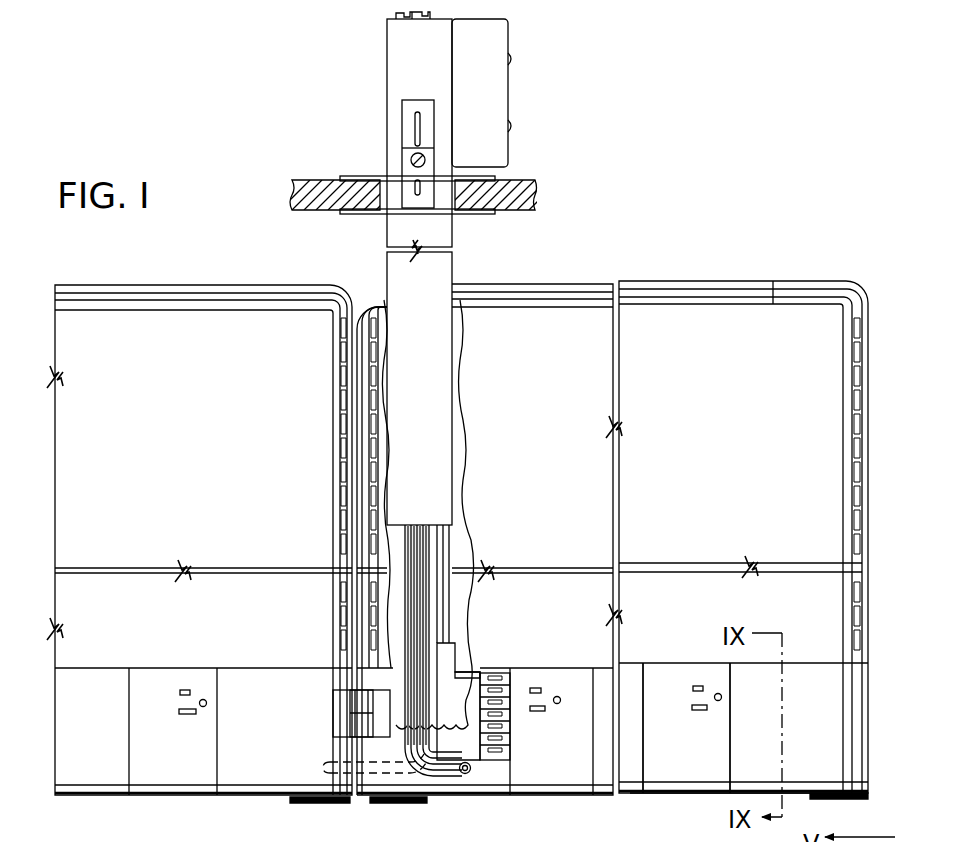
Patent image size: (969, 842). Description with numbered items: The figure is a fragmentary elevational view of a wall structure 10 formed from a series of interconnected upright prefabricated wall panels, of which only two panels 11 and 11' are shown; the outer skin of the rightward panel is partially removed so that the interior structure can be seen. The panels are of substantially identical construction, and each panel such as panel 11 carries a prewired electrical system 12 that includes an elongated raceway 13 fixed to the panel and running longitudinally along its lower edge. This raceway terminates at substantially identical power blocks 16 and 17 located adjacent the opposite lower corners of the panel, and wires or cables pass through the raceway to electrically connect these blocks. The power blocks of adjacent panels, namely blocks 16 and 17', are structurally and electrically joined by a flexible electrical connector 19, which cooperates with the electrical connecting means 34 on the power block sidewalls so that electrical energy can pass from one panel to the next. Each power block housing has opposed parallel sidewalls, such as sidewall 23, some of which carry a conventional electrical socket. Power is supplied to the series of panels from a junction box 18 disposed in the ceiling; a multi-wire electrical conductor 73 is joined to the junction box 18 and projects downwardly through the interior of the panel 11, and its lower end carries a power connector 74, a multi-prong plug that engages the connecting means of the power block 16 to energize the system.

The wall structure 10 is at (668, 178).
The wall panel 11 is at (737, 510).
The wall panel 11' is at (199, 510).
The prewired electrical system 12 is at (577, 663).
The raceway 13 is at (632, 680).
The power block 16 is at (545, 782).
The power block 17 is at (686, 747).
The power block 17' is at (203, 754).
The junction box 18 is at (493, 90).
The flexible electrical connector 19 is at (284, 666).
The sidewall 23 is at (652, 841).
The electrical connecting means 34 is at (505, 721).
The multi-wire electrical conductor 73 is at (452, 541).
The power connector 74 is at (467, 695).